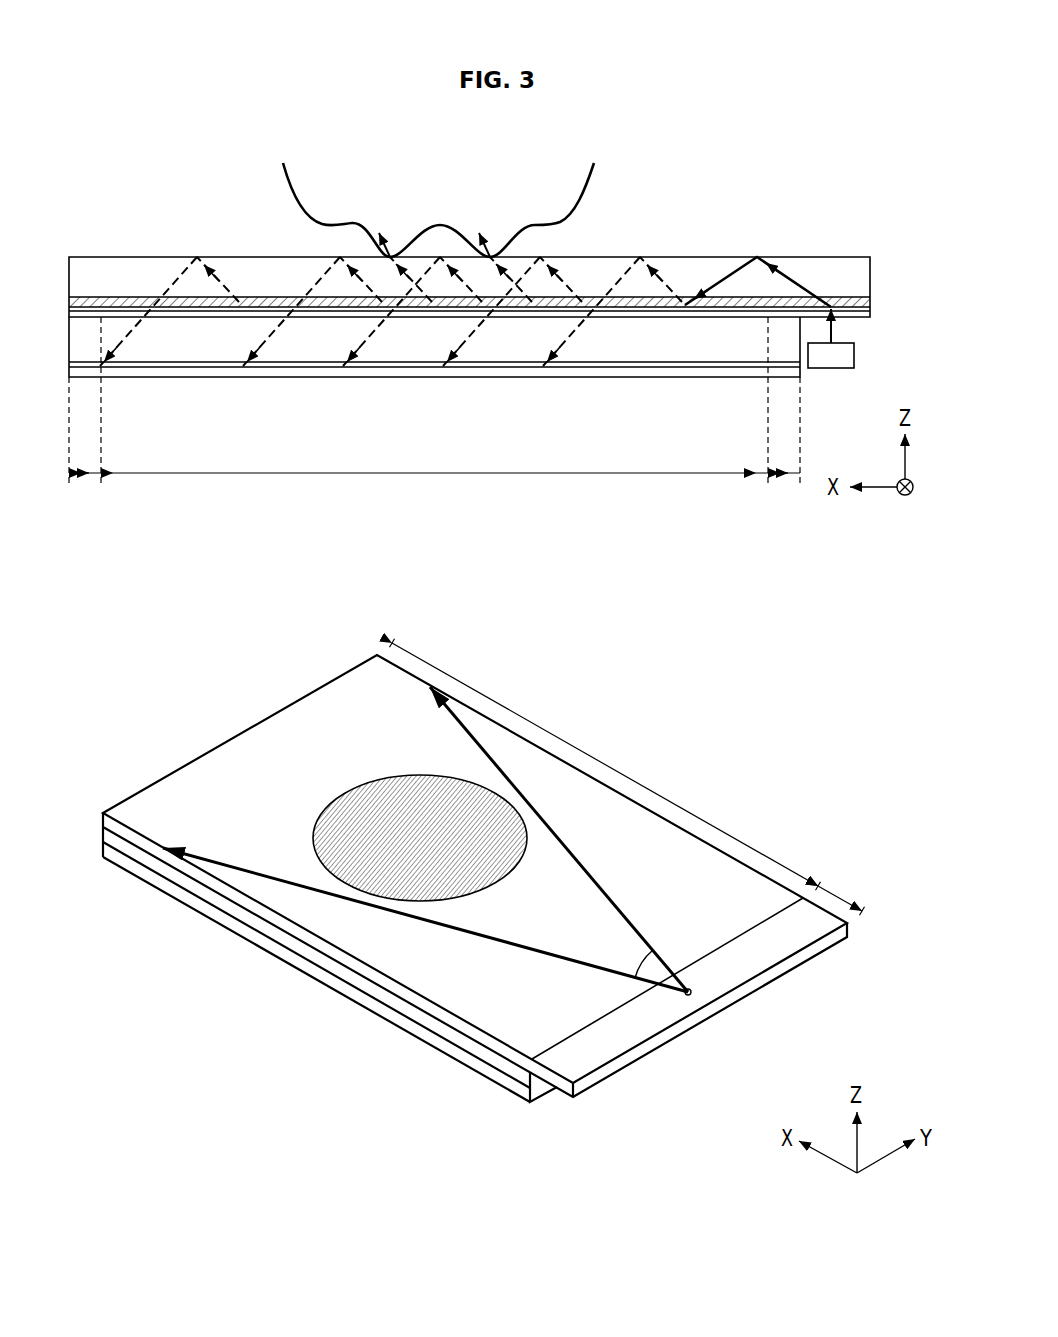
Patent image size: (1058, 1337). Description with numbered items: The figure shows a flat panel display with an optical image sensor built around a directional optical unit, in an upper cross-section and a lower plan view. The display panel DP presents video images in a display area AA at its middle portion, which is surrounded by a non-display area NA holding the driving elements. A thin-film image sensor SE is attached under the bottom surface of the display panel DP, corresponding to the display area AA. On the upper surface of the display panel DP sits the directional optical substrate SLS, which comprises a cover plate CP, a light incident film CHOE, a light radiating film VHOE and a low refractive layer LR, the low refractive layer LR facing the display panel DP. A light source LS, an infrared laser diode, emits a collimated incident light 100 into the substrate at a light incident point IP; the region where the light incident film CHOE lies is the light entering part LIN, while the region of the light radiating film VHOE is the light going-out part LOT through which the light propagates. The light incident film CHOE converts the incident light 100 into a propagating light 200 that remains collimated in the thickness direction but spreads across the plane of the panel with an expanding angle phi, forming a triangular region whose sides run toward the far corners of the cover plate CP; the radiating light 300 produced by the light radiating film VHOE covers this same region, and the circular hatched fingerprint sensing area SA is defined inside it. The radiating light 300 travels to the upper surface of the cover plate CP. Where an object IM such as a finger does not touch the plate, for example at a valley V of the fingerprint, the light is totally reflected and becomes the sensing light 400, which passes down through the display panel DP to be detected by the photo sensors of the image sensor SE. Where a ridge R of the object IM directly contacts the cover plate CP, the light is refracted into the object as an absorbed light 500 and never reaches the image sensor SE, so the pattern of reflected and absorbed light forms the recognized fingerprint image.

The incident light 100 is at (808, 336).
The propagating light 200 is at (728, 283).
The radiating light 300 is at (220, 283).
The sensing light 400 is at (143, 322).
The absorbed light 500 is at (350, 352).
The object IM is at (305, 195).
The valley V is at (440, 222).
The ridge R is at (394, 252).
The directional optical substrate SLS is at (867, 186).
The cover plate CP is at (690, 268).
The light radiating film VHOE is at (756, 300).
The low refractive layer LR is at (790, 310).
The light incident film CHOE is at (845, 295).
The light source LS is at (848, 356).
The display panel DP is at (672, 348).
The image sensor SE is at (695, 370).
The display area AA is at (434, 411).
The non-display area NA is at (434, 441).
The fingerprint sensing area SA is at (357, 793).
The light incident point IP is at (695, 998).
The light going-out part LOT is at (605, 765).
The light entering part LIN is at (853, 895).
The expanding angle phi is at (638, 959).